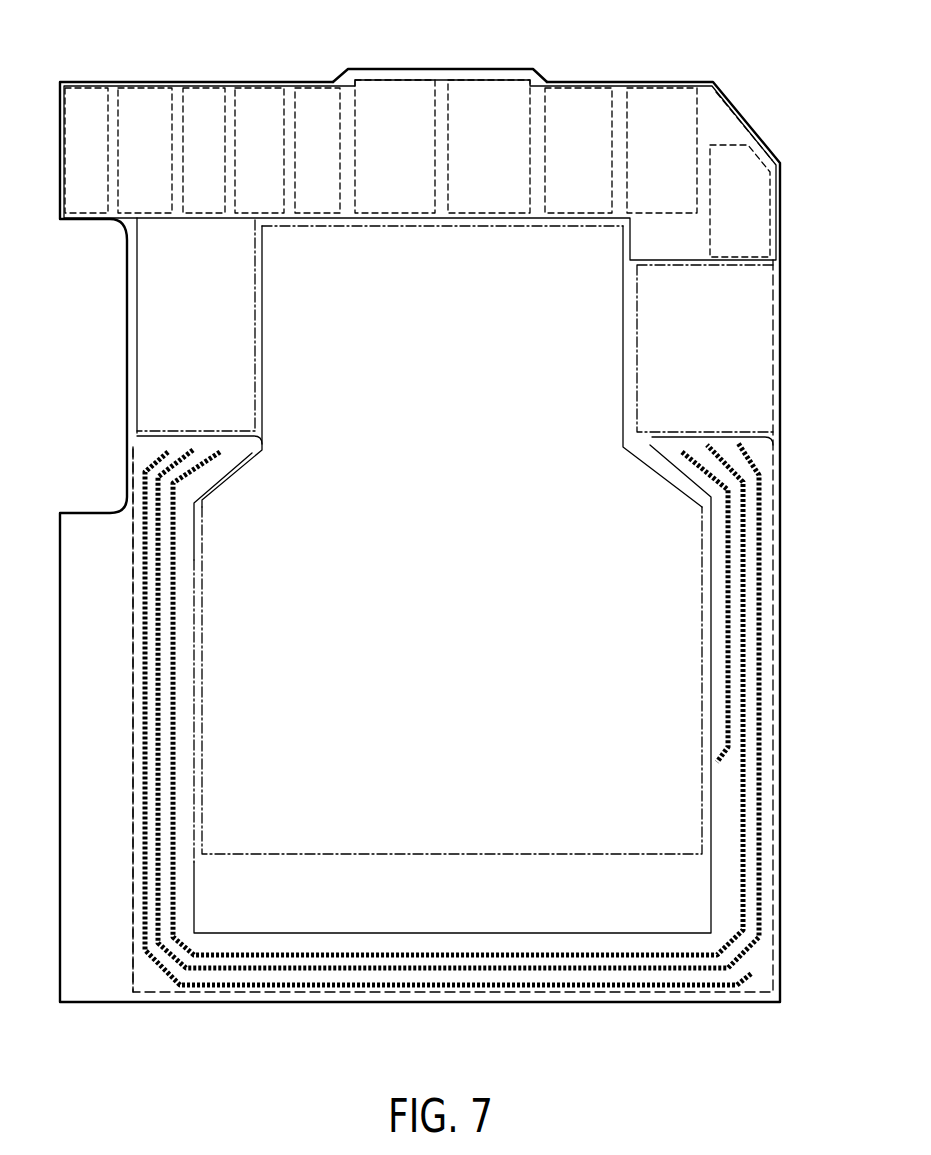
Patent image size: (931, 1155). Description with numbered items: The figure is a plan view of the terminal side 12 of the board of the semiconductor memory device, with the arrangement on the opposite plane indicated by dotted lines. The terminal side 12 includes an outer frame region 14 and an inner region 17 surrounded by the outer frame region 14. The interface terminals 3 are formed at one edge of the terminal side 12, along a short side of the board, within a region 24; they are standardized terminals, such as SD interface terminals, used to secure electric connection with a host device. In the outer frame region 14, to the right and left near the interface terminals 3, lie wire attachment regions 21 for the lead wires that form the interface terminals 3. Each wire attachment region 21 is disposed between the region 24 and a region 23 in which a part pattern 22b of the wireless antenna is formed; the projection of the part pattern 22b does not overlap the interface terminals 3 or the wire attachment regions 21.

The interface terminal 3 is at (86, 100).
The terminal side 12 is at (778, 440).
The outer frame region 14 is at (95, 968).
The inner region 17 is at (655, 887).
The wire attachment region 21 is at (155, 330).
The part pattern of the wireless antenna 22b is at (760, 786).
The region in which the part pattern of the wireless antenna is formed 23 is at (132, 757).
The region in which the interface terminals are formed 24 is at (438, 67).